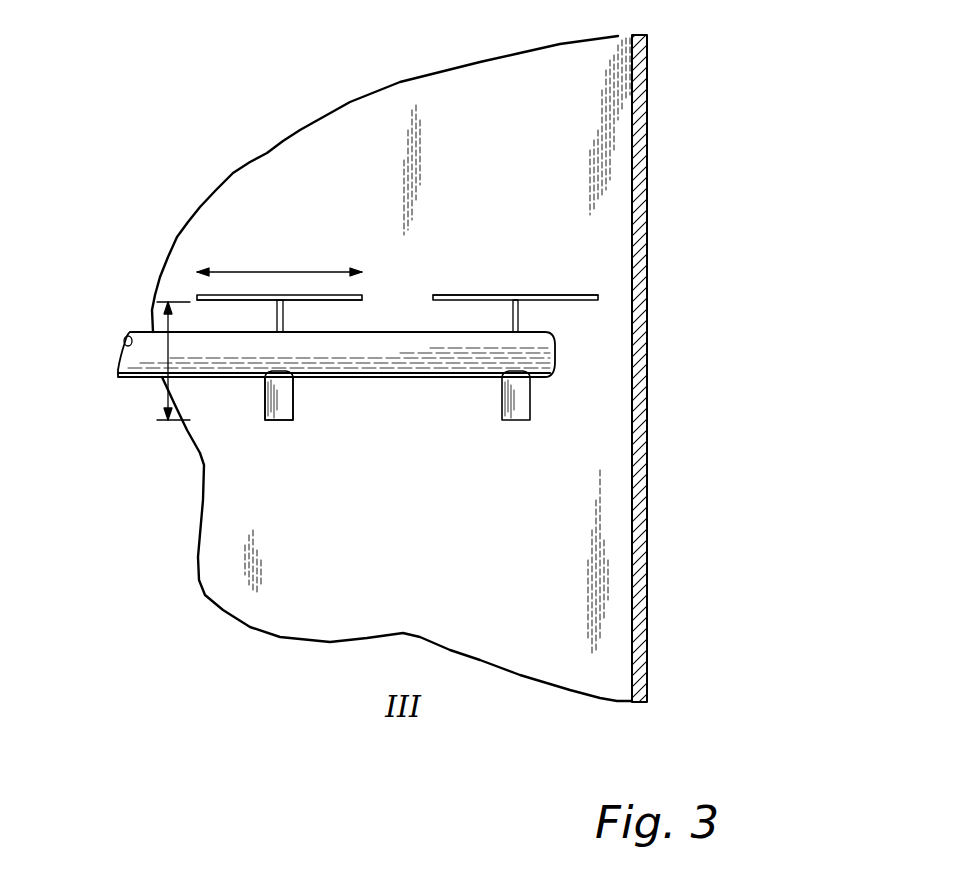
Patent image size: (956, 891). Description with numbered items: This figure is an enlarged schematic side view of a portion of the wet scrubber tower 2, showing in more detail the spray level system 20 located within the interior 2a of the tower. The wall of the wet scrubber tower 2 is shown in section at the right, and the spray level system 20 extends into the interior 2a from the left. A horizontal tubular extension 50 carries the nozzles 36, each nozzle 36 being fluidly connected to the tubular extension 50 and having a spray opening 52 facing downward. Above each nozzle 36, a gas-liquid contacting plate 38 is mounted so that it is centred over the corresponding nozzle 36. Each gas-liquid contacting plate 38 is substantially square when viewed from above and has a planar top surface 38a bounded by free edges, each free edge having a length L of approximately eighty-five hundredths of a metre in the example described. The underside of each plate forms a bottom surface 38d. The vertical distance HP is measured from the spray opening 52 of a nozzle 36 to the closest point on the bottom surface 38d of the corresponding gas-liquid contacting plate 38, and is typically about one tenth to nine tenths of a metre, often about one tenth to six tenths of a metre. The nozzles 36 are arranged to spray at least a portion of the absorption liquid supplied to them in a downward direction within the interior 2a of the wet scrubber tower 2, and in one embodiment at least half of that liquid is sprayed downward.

The wet scrubber tower 2 is at (647, 202).
The interior of wet scrubber tower 2a is at (570, 522).
The spray level system 20 is at (678, 295).
The nozzle 36 is at (295, 403).
The gas-liquid contacting plate 38 is at (358, 297).
The planar top surface 38a is at (560, 297).
The bottom surface 38d is at (340, 300).
The tubular extension 50 is at (213, 378).
The spray opening 52 is at (282, 420).
The vertical distance HP is at (153, 332).
The length of free edge L is at (279, 256).